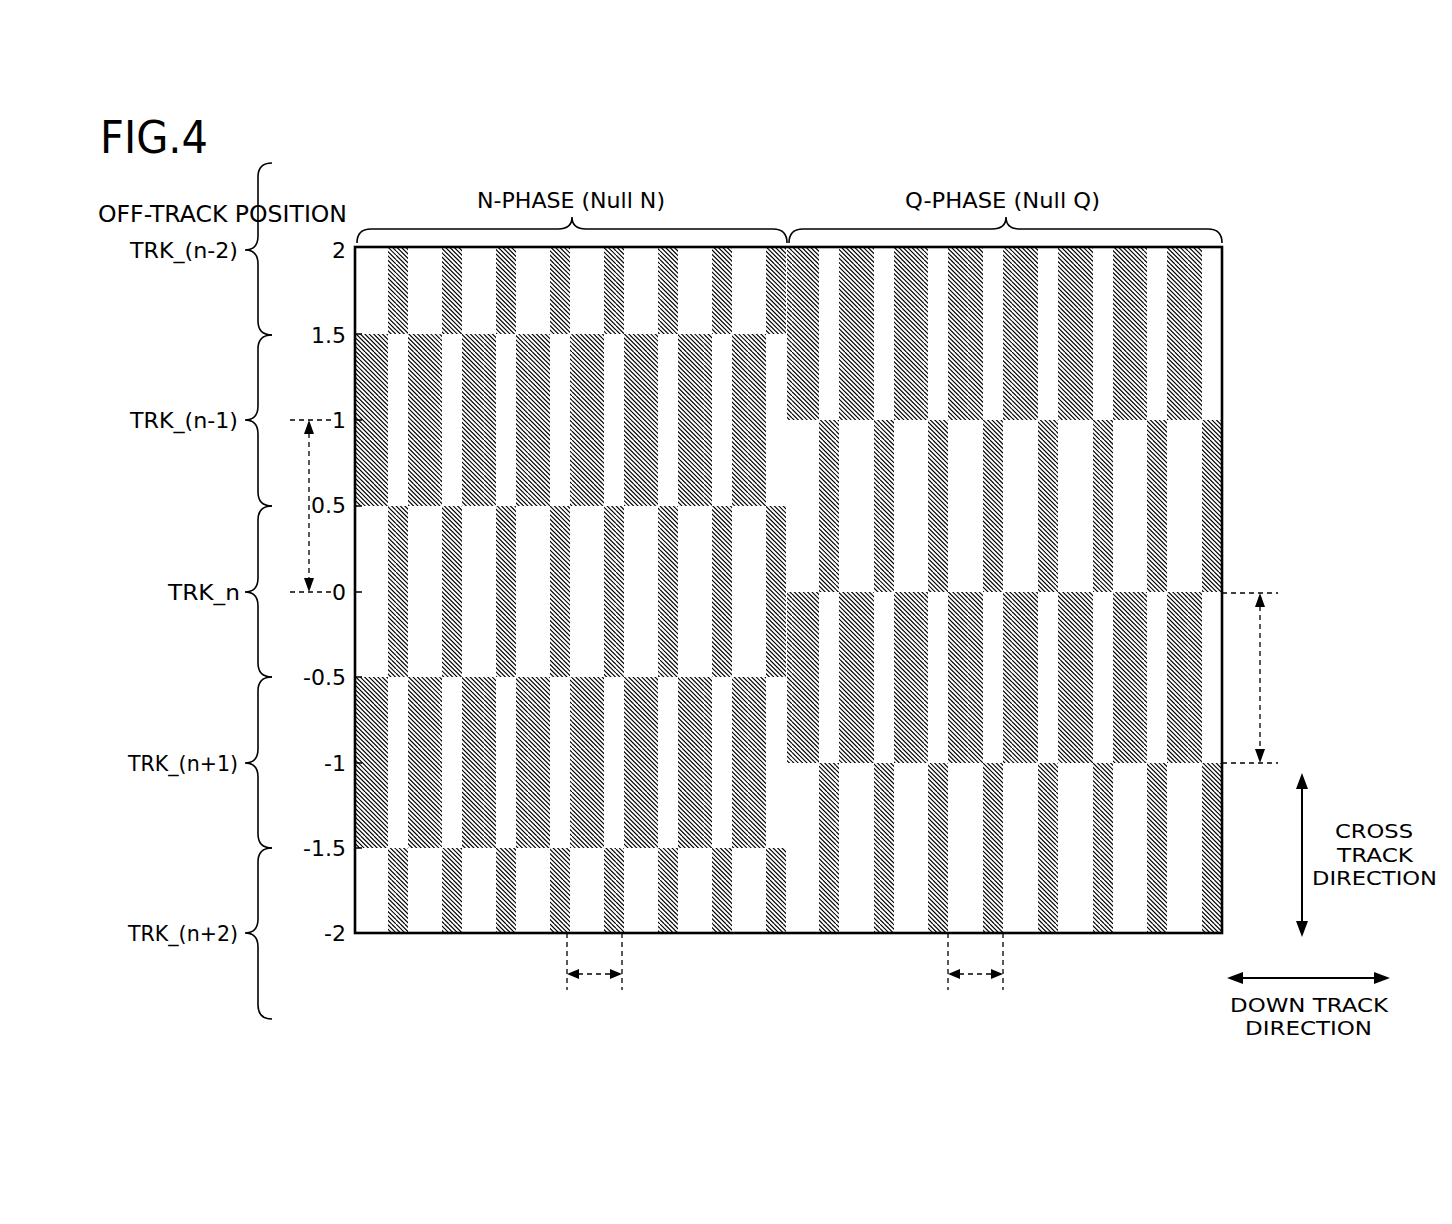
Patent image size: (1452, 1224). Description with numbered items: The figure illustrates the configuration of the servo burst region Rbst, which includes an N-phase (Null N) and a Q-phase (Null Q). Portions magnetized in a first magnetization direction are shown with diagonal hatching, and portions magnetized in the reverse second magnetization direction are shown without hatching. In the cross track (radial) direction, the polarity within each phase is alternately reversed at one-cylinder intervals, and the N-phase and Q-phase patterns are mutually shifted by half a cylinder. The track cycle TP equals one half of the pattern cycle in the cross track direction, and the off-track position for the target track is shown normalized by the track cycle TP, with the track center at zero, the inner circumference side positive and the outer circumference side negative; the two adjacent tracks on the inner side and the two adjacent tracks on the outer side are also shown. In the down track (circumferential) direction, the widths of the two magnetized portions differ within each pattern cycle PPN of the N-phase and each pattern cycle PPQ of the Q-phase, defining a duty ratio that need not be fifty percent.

The servo burst region Rbst is at (1222, 178).
The track cycle TP is at (305, 467).
The pattern cycle of the N-phase in the down track direction PPN is at (594, 977).
The pattern cycle of the Q-phase in the down track direction PPQ is at (975, 977).